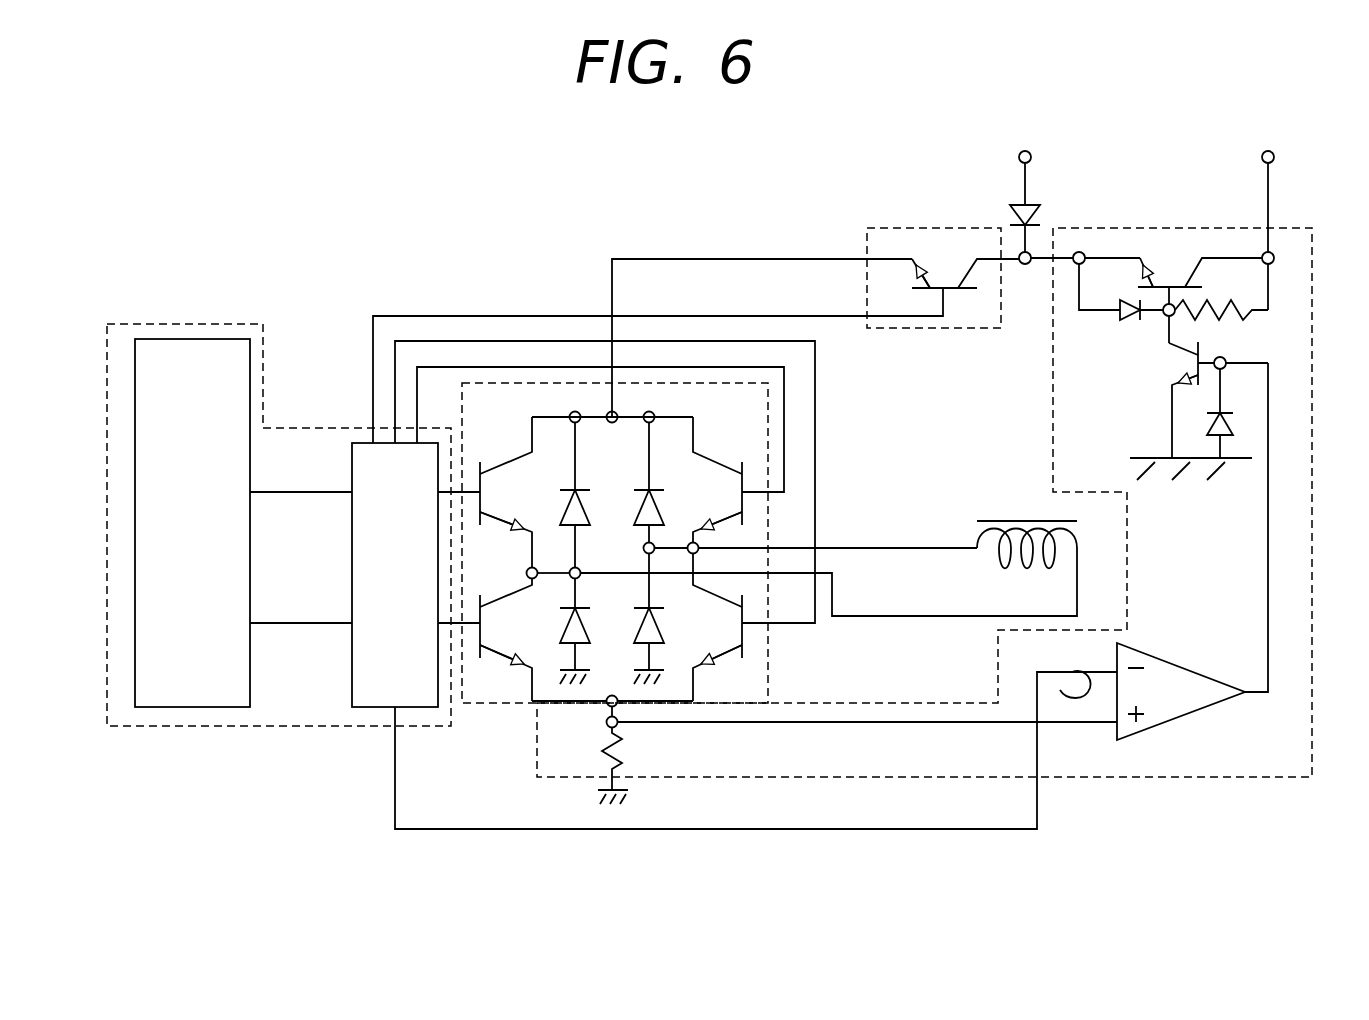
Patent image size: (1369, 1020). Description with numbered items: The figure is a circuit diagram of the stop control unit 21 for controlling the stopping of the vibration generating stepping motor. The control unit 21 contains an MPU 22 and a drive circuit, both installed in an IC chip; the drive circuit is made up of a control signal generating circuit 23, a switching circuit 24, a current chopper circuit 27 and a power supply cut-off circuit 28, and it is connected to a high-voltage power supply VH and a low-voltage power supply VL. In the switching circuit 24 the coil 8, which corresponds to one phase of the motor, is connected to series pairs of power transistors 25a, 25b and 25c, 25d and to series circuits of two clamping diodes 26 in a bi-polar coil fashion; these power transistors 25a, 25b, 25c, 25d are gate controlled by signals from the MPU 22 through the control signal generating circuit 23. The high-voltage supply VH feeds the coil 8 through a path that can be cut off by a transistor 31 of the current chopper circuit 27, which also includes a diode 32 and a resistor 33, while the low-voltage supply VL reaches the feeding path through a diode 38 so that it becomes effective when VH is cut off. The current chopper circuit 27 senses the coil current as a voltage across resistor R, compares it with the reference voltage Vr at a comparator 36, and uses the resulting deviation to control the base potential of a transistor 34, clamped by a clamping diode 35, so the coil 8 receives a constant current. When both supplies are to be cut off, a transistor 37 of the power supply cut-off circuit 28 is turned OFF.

The stop control unit 21 is at (272, 196).
The MPU 22 is at (135, 420).
The control signal generating circuit 23 is at (356, 440).
The switching circuit 24 is at (615, 491).
The power transistor 25a is at (540, 506).
The power transistor 25b is at (540, 637).
The power transistor 25c is at (729, 506).
The power transistor 25d is at (729, 637).
The diode 26 is at (590, 513).
The current chopper circuit 27 is at (952, 502).
The power supply cut-off circuit 28 is at (933, 235).
The transistor 31 is at (1170, 282).
The diode 32 is at (1137, 323).
The resistor 33 is at (1232, 305).
The transistor 34 is at (1193, 360).
The diode 35 is at (1228, 413).
The comparator 36 is at (1180, 665).
The transistor 37 is at (947, 287).
The diode 38 is at (1016, 208).
The coil 8 is at (998, 521).